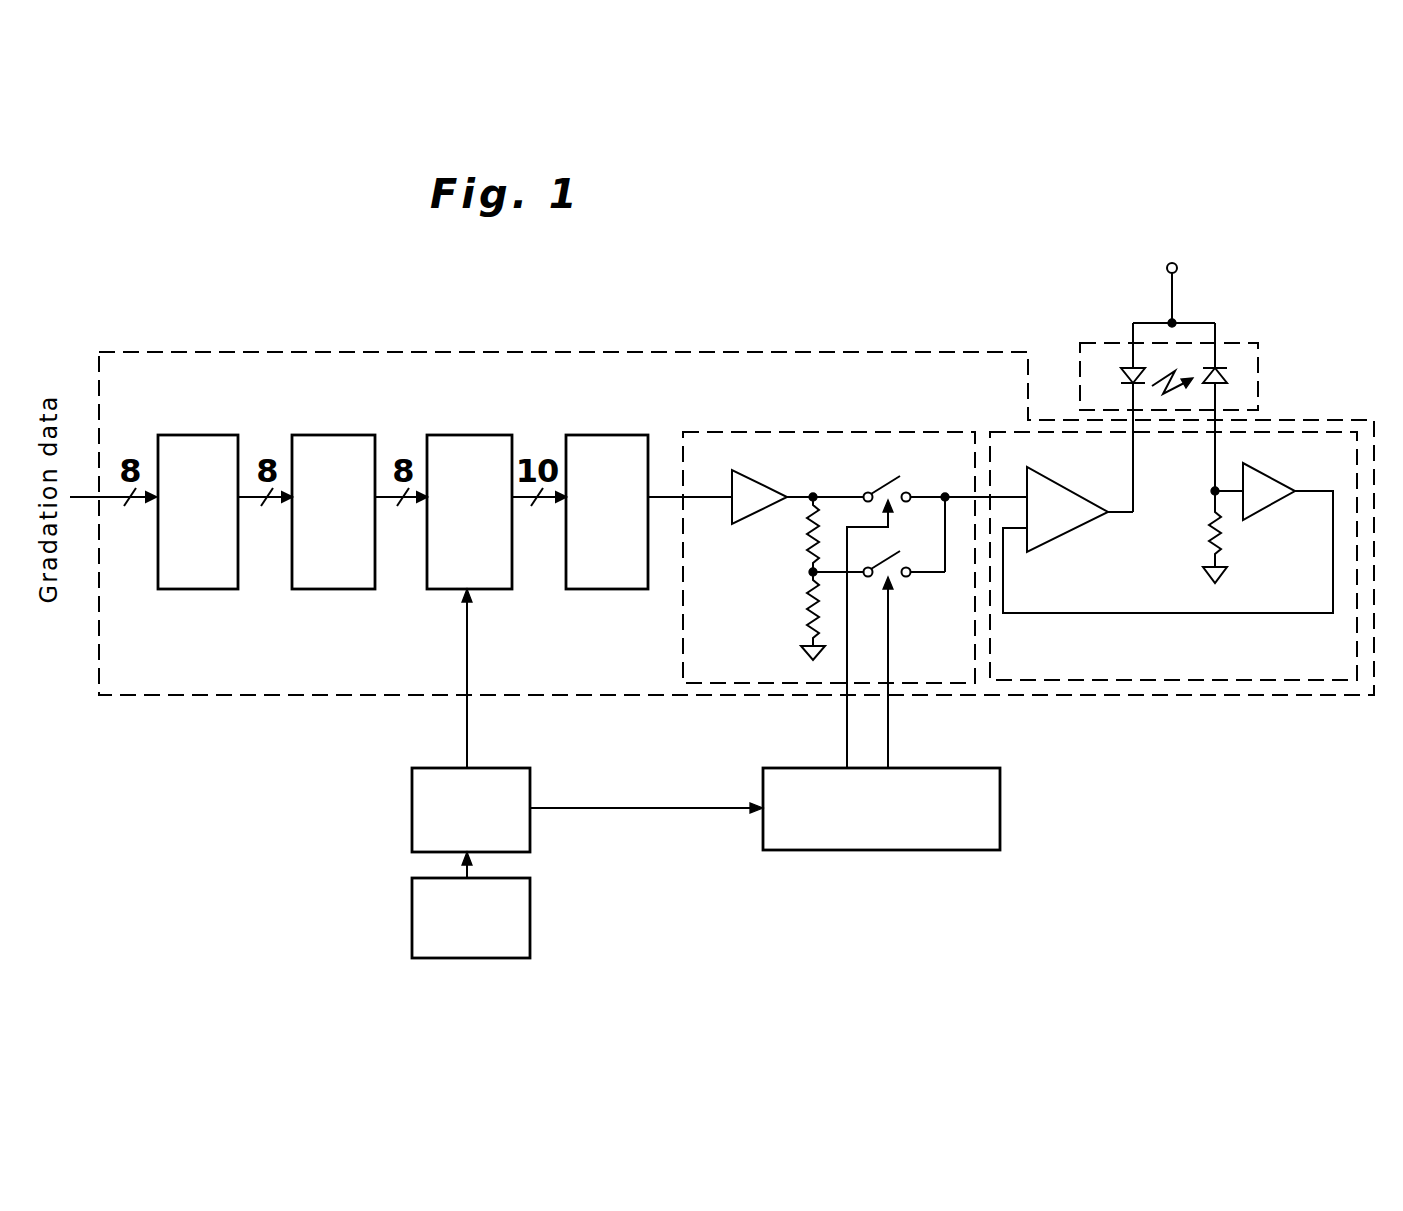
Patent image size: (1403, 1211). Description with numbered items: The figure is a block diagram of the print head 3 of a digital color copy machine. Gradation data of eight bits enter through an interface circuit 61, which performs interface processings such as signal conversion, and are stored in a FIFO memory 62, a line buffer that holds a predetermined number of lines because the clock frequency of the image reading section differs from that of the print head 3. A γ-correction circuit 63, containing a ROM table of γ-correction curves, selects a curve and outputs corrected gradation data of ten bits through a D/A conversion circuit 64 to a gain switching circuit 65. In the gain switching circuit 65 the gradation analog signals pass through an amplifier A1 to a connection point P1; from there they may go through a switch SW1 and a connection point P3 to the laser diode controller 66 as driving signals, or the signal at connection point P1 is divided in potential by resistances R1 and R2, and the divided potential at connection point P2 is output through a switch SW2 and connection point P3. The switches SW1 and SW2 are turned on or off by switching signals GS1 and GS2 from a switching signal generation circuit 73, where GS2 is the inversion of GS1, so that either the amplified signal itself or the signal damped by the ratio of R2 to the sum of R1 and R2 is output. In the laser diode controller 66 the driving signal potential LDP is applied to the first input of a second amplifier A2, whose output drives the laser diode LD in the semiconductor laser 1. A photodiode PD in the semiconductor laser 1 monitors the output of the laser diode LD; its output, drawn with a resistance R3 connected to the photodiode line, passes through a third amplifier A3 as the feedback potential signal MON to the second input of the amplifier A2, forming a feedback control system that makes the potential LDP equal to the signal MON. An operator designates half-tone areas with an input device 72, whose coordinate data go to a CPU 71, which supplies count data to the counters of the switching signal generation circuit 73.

The semiconductor laser 1 is at (1180, 387).
The print head 3 is at (787, 352).
The interface circuit 61 is at (197, 435).
The FIFO memory 62 is at (330, 435).
The γ-correction circuit 63 is at (467, 435).
The D/A conversion circuit 64 is at (605, 435).
The gain switching circuit 65 is at (855, 519).
The laser diode controller 66 is at (1173, 623).
The CPU 71 is at (530, 827).
The input device 72 is at (530, 910).
The switching signal generation circuit 73 is at (1000, 800).
The amplifier A1 is at (755, 512).
The second amplifier A2 is at (1075, 533).
The third amplifier A3 is at (1270, 507).
The resistance R1 is at (792, 534).
The resistance R2 is at (793, 618).
The resistor R3 is at (1191, 535).
The connection point P1 is at (813, 495).
The connection point P2 is at (811, 573).
The connection point P3 is at (945, 495).
The switch SW1 is at (882, 487).
The switch SW2 is at (898, 556).
The switching signal GS1 is at (847, 737).
The switching signal GS2 is at (888, 732).
The laser diode LD is at (1120, 368).
The photodiode PD is at (1230, 380).
The driving signal potential LDP is at (1066, 522).
The feedback potential signal MON is at (1215, 613).